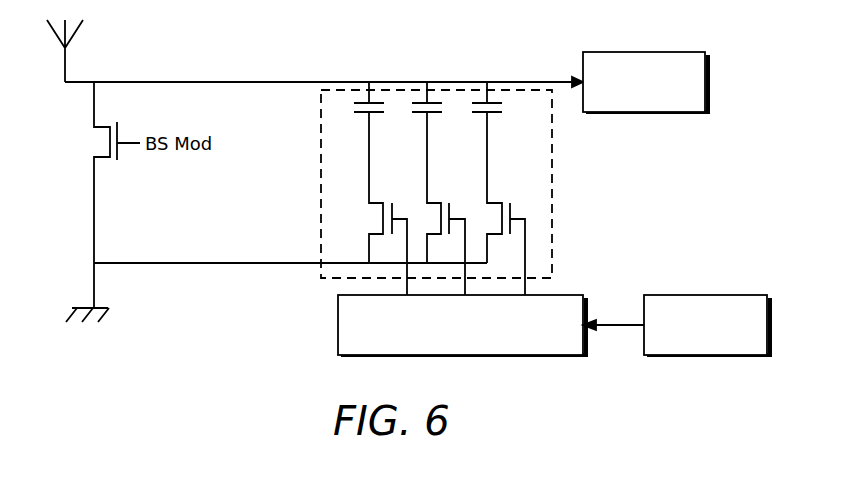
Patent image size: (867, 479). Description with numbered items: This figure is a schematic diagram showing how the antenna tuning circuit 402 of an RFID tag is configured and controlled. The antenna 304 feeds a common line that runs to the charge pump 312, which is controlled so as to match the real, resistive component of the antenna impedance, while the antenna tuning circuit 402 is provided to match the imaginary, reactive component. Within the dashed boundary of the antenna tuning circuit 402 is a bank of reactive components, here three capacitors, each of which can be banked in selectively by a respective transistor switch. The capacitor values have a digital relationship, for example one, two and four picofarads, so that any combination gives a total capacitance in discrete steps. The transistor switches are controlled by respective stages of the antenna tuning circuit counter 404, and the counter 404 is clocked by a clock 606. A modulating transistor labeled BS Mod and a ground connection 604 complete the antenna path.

The antenna 304 is at (66, 72).
The charge pump 312 is at (643, 52).
The antenna tuning circuit 402 is at (553, 196).
The antenna tuning circuit counter 404 is at (568, 295).
The ground 604 is at (95, 296).
The clock 606 is at (705, 295).